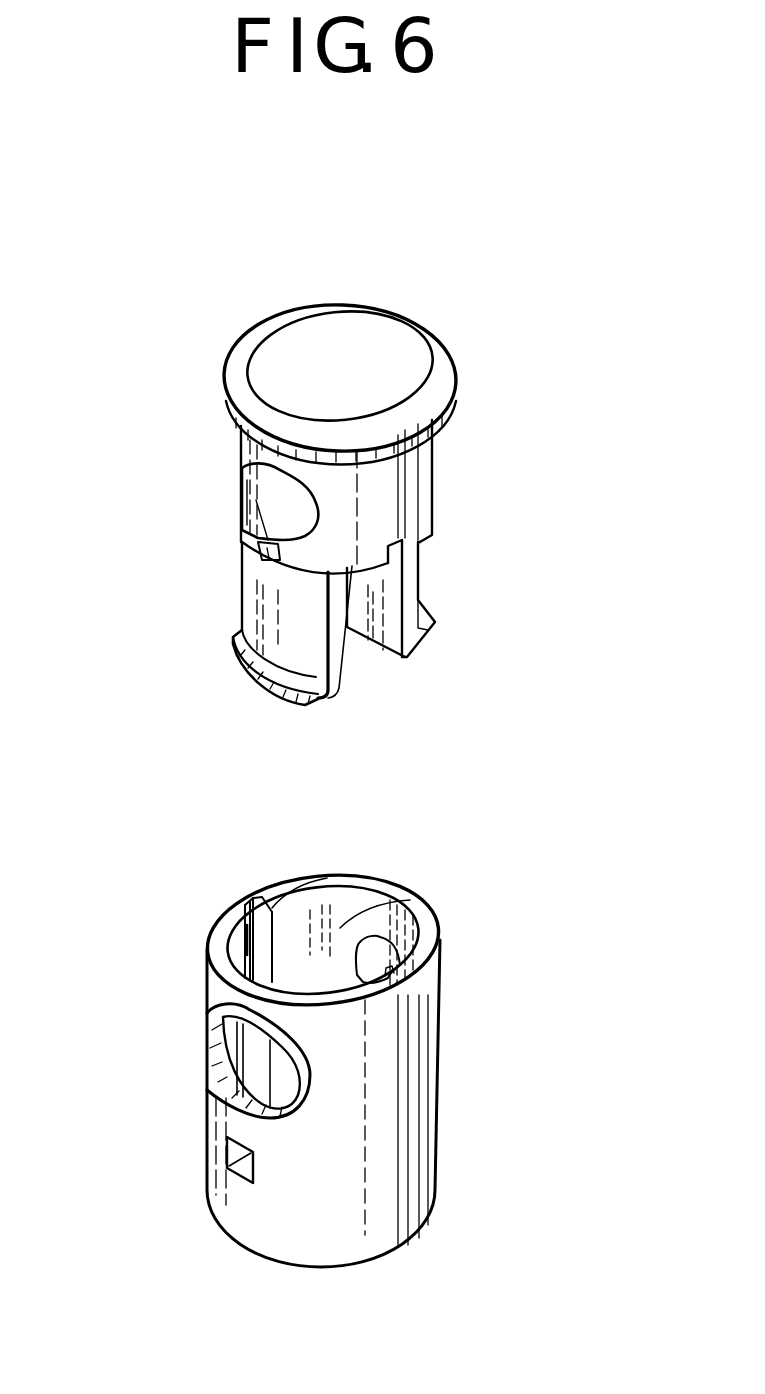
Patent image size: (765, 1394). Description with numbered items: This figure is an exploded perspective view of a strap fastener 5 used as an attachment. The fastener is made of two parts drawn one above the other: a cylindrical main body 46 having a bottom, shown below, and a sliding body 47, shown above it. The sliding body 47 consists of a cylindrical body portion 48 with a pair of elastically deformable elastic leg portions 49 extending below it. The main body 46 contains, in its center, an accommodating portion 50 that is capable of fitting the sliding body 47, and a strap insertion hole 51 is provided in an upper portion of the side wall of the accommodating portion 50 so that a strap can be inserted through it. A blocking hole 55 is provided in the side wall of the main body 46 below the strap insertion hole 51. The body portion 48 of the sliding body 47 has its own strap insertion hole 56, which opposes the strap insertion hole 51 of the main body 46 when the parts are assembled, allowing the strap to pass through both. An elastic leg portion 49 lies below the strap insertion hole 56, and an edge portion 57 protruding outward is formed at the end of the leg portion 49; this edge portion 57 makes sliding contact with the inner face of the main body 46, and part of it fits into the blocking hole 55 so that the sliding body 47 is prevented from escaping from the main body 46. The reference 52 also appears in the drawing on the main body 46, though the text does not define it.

The strap fastener 5 is at (222, 794).
The cylindrical main body 46 is at (450, 1034).
The sliding body 47 is at (363, 297).
The cylindrical body portion 48 is at (350, 498).
The elastic leg portions 49 is at (270, 578).
The accommodating portion 50 is at (343, 927).
The strap insertion hole 51 is at (287, 1070).
The guide rib 52 is at (322, 878).
The blocking hole 55 is at (227, 1162).
The strap insertion hole 56 is at (267, 488).
The edge portion 57 is at (247, 677).